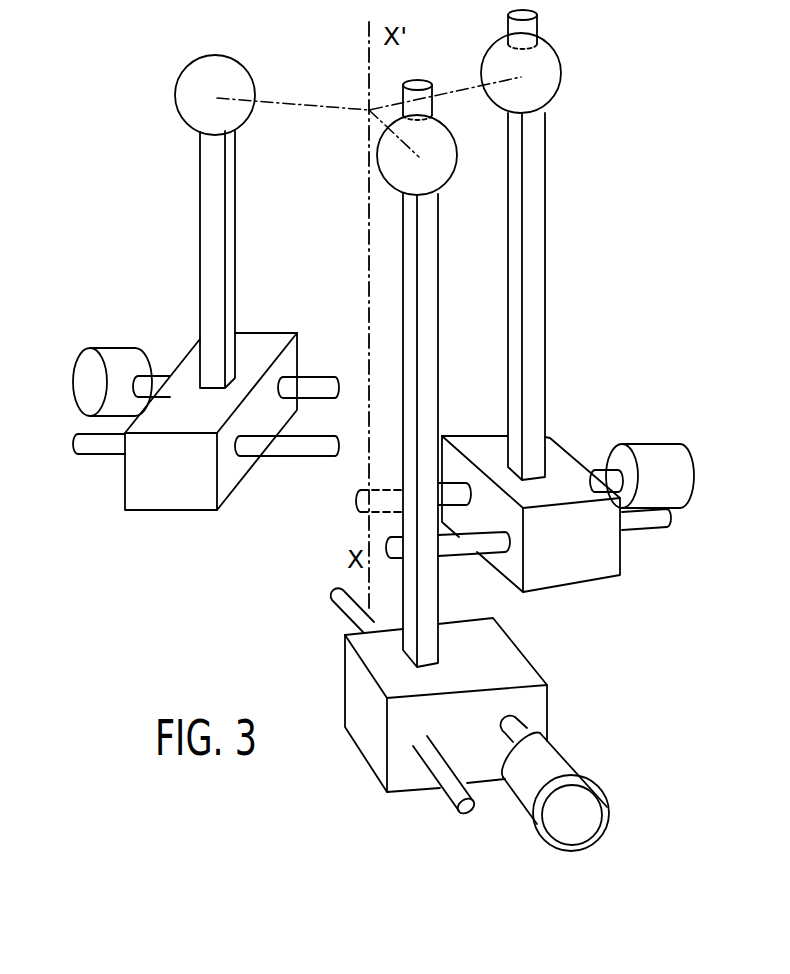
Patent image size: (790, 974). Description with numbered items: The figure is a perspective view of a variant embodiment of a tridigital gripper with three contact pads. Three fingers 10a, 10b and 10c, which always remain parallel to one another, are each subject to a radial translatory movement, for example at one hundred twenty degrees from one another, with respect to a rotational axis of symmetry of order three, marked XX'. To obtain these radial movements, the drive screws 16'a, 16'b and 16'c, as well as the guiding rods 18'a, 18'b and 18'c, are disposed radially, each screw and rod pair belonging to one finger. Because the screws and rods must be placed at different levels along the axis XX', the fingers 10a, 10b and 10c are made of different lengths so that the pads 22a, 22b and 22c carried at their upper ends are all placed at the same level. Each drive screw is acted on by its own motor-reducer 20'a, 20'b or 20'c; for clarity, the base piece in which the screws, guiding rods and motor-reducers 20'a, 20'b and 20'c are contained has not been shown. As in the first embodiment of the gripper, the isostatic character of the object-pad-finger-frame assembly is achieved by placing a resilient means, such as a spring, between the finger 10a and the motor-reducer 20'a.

The finger 10a is at (218, 258).
The finger 10b is at (533, 263).
The finger 10c is at (405, 280).
The pad 22a is at (190, 92).
The pad 22b is at (550, 72).
The pad 22c is at (395, 172).
The drive screw 16'a is at (247, 351).
The drive screw 16'b is at (489, 445).
The drive screw 16'c is at (569, 713).
The guiding rod 18'a is at (206, 468).
The guiding rod 18'b is at (537, 551).
The guiding rod 18'c is at (377, 702).
The motor-reducer 20'a is at (112, 355).
The motor-reducer 20'b is at (650, 443).
The motor-reducer 20'c is at (582, 792).